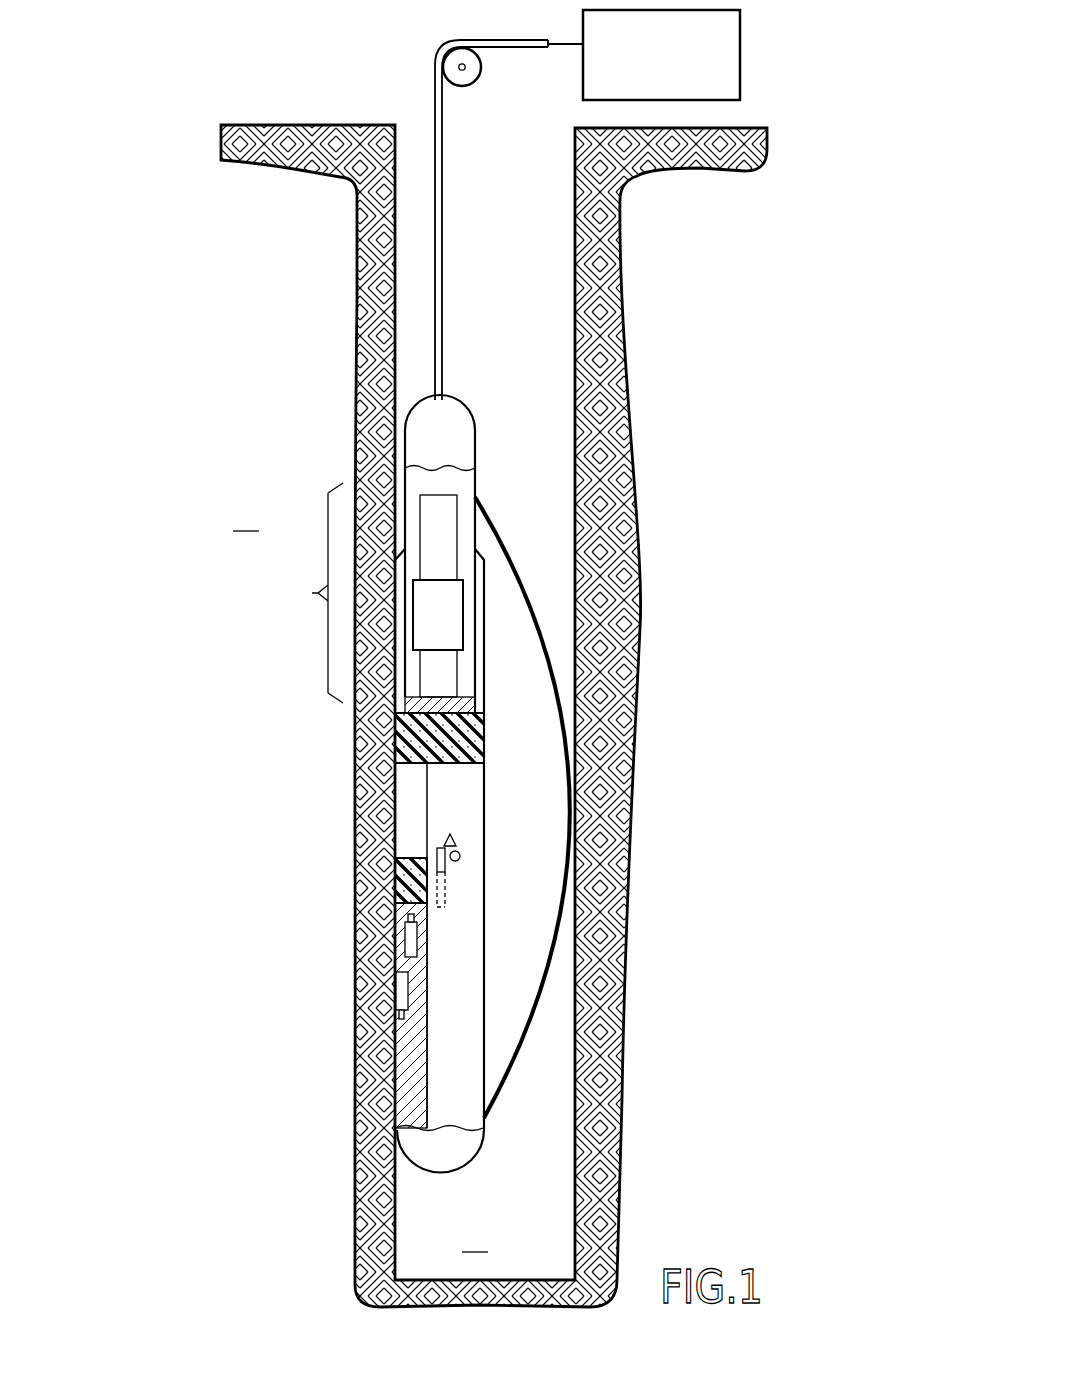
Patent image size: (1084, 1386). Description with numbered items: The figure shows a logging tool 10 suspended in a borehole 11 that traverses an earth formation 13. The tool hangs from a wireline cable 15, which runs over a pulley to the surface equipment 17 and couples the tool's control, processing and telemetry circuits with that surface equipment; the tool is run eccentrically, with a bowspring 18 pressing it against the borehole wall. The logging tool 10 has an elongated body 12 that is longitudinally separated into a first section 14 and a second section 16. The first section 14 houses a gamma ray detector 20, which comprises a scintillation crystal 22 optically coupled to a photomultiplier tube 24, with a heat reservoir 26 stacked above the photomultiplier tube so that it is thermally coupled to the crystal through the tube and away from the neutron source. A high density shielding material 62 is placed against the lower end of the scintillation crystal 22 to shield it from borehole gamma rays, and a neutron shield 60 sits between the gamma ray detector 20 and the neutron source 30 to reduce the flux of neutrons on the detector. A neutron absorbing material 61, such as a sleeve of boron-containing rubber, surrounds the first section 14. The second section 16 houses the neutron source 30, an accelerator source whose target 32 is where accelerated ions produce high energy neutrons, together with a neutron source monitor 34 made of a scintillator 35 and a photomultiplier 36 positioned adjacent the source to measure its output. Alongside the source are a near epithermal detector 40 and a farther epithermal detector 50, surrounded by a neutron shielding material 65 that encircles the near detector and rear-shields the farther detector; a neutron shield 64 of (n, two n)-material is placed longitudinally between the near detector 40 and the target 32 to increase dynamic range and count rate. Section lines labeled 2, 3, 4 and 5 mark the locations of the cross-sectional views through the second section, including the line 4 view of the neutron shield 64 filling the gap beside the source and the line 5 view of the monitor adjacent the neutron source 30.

The logging tool 10 is at (463, 390).
The borehole 11 is at (478, 1240).
The elongated body 12 is at (477, 417).
The earth formation 13 is at (249, 518).
The first section 14 is at (466, 476).
The wireline cable 15 is at (444, 165).
The second section 16 is at (462, 783).
The surface equipment 17 is at (742, 78).
The bowspring 18 is at (505, 1092).
The gamma ray detector 20 is at (312, 593).
The scintillation crystal 22 is at (445, 675).
The photomultiplier tube 24 is at (452, 630).
The heat reservoir 26 is at (447, 520).
The neutron source 30 is at (433, 792).
The target 32 is at (460, 858).
The neutron source monitor 34 is at (452, 832).
The scintillator 35 is at (436, 850).
The photomultiplier 36 is at (441, 906).
The near epithermal detector 40 is at (418, 940).
The farther epithermal detector 50 is at (409, 990).
The neutron shield 60 is at (484, 750).
The neutron absorbing material 61 is at (478, 628).
The high density shielding material 62 is at (465, 705).
The neutron shield 64 is at (400, 870).
The neutron shielding material 65 is at (405, 1075).
The section line FIG. 2 is at (322, 990).
The section line FIG. 3 is at (322, 935).
The section line 4— 4 is at (290, 895).
The section line 5— 5 is at (322, 850).